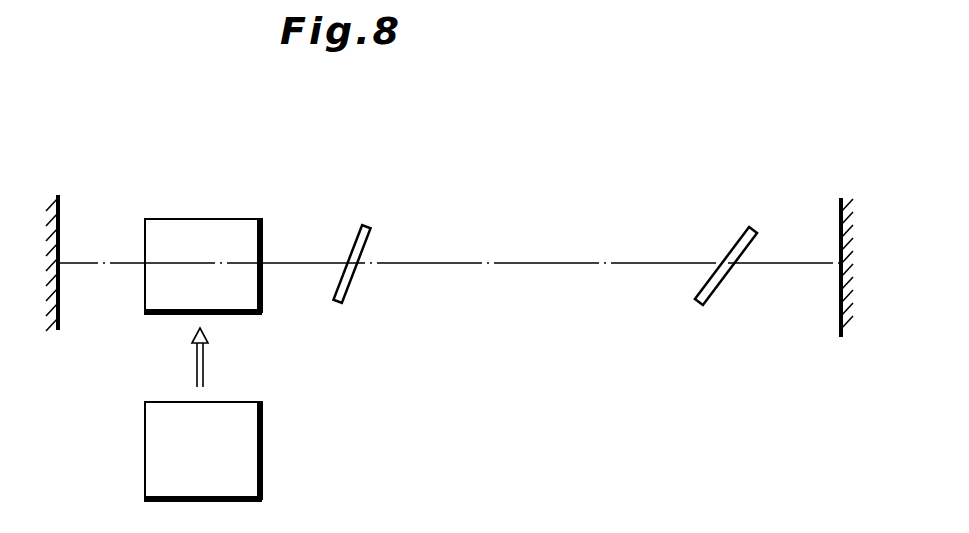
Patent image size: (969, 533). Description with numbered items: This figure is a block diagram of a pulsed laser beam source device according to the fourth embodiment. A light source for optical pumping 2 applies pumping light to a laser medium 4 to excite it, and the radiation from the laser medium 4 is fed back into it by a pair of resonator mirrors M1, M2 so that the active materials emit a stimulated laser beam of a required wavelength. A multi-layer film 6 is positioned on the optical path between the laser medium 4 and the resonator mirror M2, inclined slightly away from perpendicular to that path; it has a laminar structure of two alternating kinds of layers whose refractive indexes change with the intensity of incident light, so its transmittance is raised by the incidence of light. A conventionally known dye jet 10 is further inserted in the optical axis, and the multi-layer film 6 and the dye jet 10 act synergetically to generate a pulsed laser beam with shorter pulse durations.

The resonator mirror M1 is at (52, 193).
The resonator mirror M2 is at (848, 196).
The light source for optical pumping 2 is at (262, 470).
The laser medium 4 is at (203, 217).
The multi-layer film 6 is at (356, 244).
The dye jet 10 is at (730, 250).